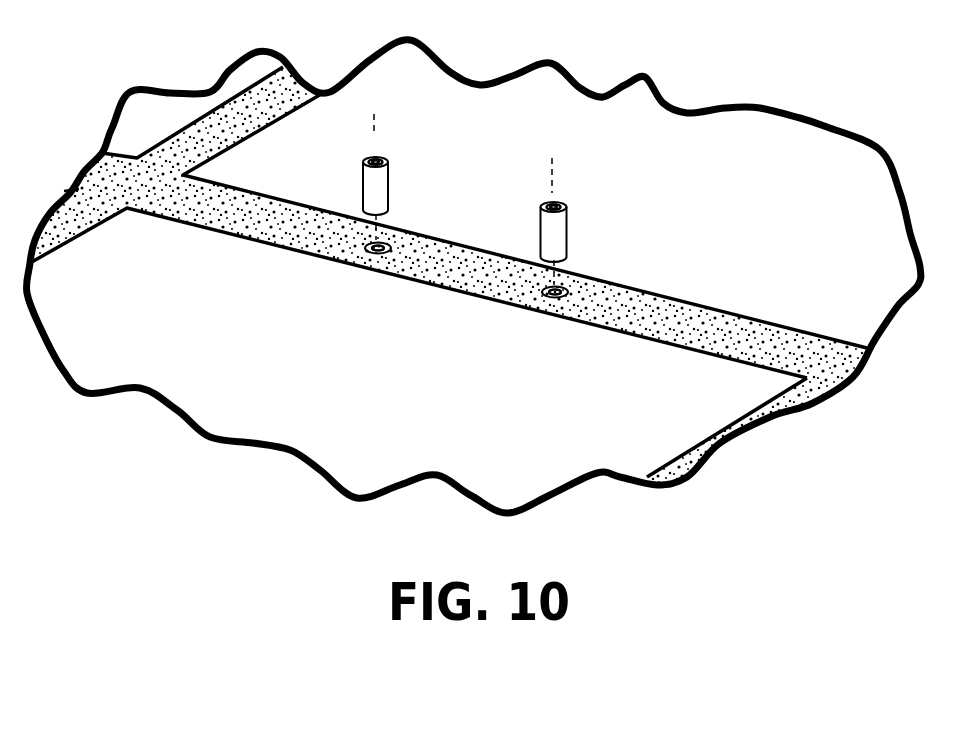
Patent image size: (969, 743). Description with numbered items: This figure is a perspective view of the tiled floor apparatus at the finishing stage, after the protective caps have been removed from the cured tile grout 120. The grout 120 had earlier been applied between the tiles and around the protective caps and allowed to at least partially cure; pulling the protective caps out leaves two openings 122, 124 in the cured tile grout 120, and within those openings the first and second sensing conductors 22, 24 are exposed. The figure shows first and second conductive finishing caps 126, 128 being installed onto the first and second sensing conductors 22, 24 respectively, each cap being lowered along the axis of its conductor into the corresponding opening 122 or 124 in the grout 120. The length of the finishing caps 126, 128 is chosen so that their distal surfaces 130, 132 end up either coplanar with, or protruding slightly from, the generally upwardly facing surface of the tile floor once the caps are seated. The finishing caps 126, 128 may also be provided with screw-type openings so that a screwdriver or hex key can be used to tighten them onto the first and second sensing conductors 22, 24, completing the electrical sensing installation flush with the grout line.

The tile grout 120 is at (705, 327).
The opening 122 is at (353, 245).
The opening 124 is at (533, 290).
The first conductive finishing cap 126 is at (382, 190).
The second conductive finishing cap 128 is at (562, 235).
The distal surface 130 is at (368, 156).
The distal surface 132 is at (547, 203).
The first sensing conductor 22 is at (380, 247).
The second sensing conductor 24 is at (558, 286).